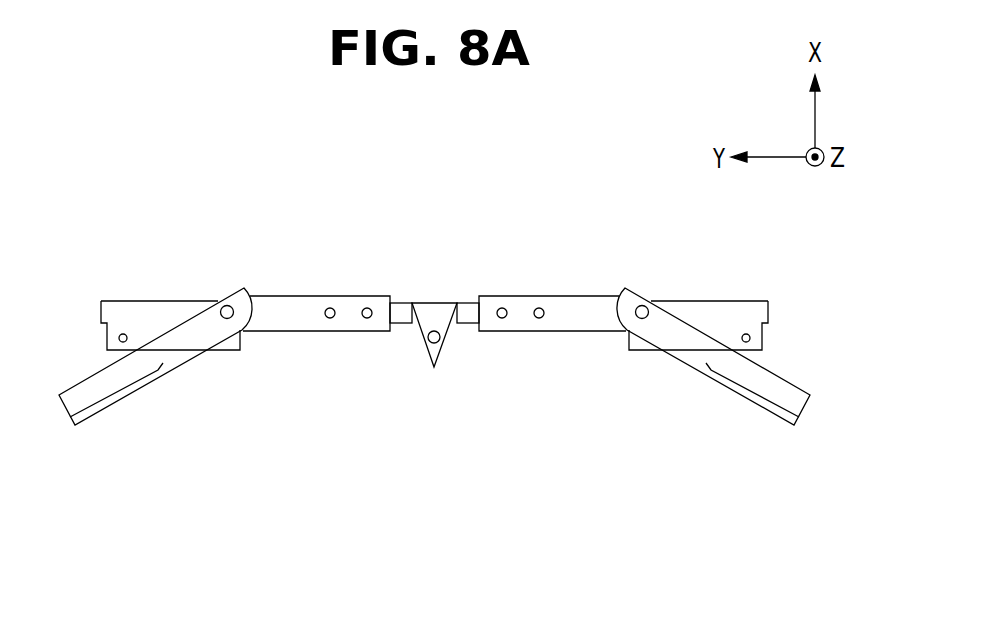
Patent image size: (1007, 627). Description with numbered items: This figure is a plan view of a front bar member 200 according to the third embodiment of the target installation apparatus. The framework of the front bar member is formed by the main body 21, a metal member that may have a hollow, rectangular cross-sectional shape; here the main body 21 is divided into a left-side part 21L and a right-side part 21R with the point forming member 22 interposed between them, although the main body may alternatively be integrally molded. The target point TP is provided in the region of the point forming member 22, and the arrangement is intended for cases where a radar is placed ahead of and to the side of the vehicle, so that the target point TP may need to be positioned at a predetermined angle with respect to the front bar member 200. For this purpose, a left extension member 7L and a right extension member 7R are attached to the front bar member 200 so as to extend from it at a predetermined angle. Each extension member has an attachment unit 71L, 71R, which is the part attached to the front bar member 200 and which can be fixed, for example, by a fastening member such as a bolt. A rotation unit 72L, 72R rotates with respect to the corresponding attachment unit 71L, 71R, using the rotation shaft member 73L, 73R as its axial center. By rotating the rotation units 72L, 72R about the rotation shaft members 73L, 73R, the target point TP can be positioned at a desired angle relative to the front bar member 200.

The front bar member 200 is at (590, 188).
The extension member 7L is at (203, 383).
The extension member 7R is at (633, 387).
The rotation unit 72L is at (90, 378).
The rotation unit 72R is at (805, 407).
The rotation shaft member 73L is at (218, 300).
The rotation shaft member 73R is at (633, 302).
The attachment unit 71L is at (302, 295).
The attachment unit 71R is at (567, 331).
The main body 21 is at (722, 295).
The left-side part 21L is at (143, 300).
The right-side part 21R is at (688, 301).
The point forming member 22 is at (418, 301).
The target point TP is at (434, 367).